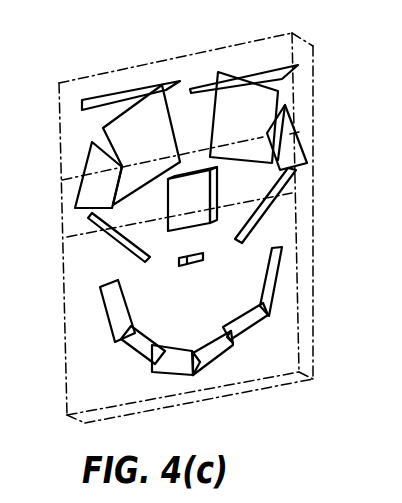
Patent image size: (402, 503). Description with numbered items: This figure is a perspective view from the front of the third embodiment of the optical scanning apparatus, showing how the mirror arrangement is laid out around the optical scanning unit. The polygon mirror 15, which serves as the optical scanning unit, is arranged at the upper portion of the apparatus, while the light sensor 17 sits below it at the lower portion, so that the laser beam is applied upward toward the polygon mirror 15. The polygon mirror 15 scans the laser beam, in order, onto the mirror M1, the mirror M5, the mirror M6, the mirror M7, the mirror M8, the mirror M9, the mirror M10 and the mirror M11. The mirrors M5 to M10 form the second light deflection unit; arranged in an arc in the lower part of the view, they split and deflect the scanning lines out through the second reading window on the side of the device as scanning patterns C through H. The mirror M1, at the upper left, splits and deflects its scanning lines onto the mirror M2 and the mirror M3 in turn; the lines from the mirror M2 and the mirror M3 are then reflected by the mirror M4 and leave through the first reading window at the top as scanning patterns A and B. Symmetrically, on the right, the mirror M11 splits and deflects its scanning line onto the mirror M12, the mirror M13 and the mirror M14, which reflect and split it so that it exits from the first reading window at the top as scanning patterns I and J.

The mirror M1 is at (116, 236).
The mirror M2 is at (78, 190).
The mirror M3 is at (103, 127).
The mirror M4 is at (127, 88).
The mirror M5 is at (104, 317).
The mirror M6 is at (121, 356).
The mirror M7 is at (173, 378).
The mirror M8 is at (232, 346).
The mirror M9 is at (247, 329).
The mirror M10 is at (282, 265).
The mirror M11 is at (268, 205).
The mirror M12 is at (297, 130).
The mirror M13 is at (278, 89).
The mirror M14 is at (262, 67).
The polygon mirror 15 is at (212, 228).
The light sensor 17 is at (181, 267).